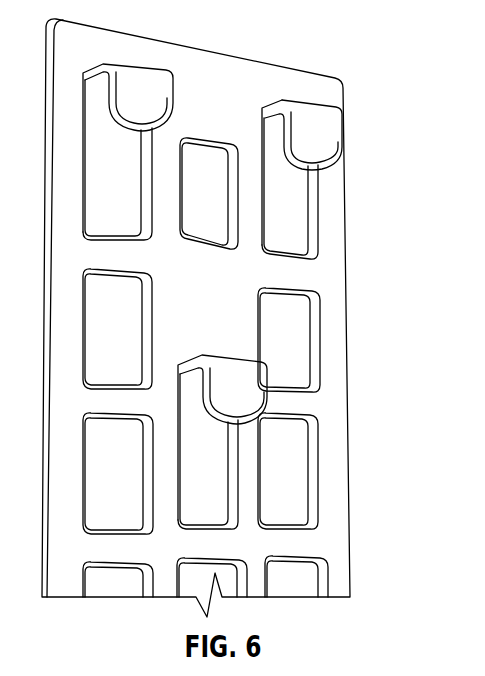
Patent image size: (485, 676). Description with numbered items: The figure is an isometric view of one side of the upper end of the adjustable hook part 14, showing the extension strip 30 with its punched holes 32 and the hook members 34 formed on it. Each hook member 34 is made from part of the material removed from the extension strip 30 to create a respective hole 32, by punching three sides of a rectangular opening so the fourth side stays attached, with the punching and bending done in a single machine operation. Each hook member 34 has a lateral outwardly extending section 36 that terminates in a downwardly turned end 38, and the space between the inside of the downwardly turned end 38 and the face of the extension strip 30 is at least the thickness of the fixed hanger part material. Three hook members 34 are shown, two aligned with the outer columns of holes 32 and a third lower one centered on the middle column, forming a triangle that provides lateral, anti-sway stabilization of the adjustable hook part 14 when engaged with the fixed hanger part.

The adjustable hook part 14 is at (382, 195).
The extension strip 30 is at (350, 497).
The hole 32 is at (312, 337).
The hook member 34 is at (156, 84).
The lateral outwardly extending section 36 is at (281, 104).
The downwardly turned end 38 is at (315, 134).